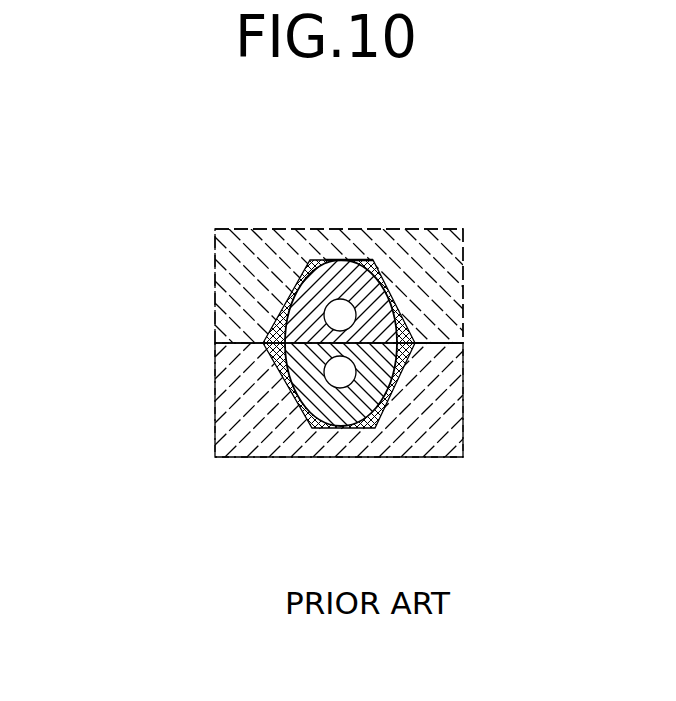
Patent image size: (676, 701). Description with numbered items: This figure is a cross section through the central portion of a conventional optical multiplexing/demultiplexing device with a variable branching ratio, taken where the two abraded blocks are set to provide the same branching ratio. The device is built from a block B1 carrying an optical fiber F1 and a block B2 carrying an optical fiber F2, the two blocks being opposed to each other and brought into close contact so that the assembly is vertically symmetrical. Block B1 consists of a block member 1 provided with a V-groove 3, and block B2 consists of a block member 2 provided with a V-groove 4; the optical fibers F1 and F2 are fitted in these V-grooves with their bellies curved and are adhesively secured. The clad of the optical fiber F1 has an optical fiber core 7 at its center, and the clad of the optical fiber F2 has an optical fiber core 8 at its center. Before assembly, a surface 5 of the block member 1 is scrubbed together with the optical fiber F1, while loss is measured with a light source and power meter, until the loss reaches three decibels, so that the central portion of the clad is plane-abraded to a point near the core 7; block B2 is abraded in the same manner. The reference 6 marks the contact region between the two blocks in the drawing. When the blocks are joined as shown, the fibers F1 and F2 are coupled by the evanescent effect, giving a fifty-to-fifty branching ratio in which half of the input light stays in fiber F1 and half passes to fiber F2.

The block member 1 is at (462, 240).
The block member 2 is at (447, 447).
The V-groove 3 is at (398, 305).
The V-groove 4 is at (390, 395).
The surface 5 is at (227, 371).
The gap between blocks 6 is at (432, 343).
The optical fiber core 7 is at (342, 298).
The optical fiber core 8 is at (342, 388).
The optical fiber F1 is at (313, 263).
The optical fiber F2 is at (327, 428).
The block B1 is at (133, 230).
The block B2 is at (133, 345).